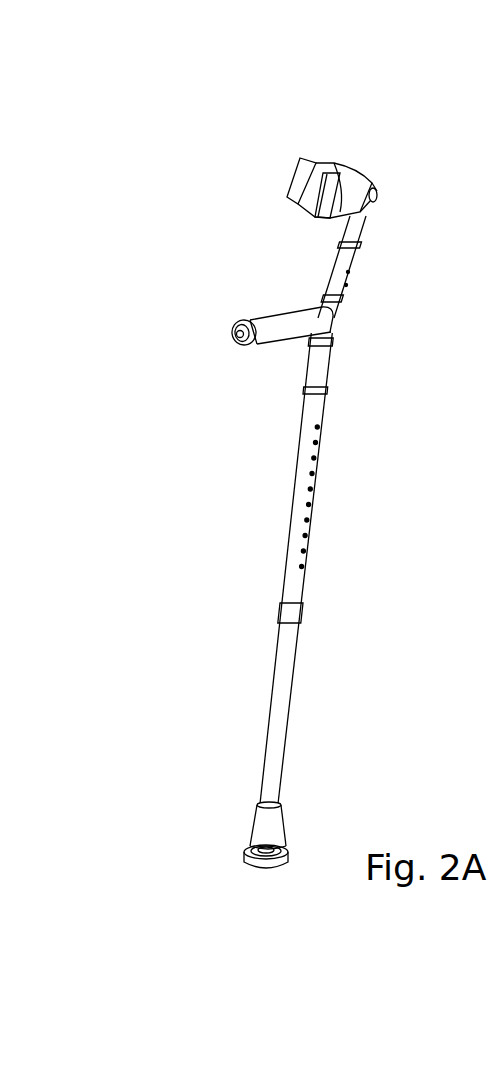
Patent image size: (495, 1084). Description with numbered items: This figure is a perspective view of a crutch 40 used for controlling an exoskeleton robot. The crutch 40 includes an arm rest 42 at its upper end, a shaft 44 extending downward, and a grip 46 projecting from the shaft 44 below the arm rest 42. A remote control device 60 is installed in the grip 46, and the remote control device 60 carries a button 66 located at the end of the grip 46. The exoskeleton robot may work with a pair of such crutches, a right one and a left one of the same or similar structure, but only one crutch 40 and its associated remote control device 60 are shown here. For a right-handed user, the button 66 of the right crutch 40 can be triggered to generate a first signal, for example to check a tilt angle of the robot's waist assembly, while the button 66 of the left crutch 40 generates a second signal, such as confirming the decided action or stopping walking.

The crutch 40 is at (418, 139).
The arm rest 42 is at (293, 176).
The shaft 44 is at (295, 522).
The grip 46 is at (283, 310).
The remote control device 60 is at (199, 336).
The button 66 is at (232, 334).